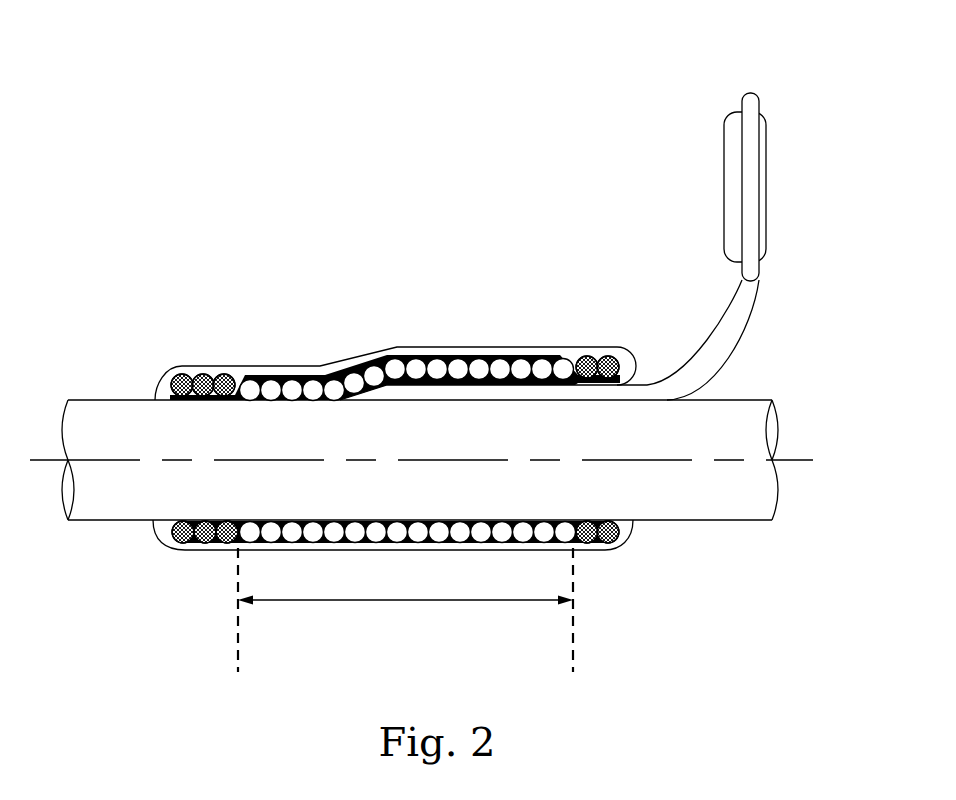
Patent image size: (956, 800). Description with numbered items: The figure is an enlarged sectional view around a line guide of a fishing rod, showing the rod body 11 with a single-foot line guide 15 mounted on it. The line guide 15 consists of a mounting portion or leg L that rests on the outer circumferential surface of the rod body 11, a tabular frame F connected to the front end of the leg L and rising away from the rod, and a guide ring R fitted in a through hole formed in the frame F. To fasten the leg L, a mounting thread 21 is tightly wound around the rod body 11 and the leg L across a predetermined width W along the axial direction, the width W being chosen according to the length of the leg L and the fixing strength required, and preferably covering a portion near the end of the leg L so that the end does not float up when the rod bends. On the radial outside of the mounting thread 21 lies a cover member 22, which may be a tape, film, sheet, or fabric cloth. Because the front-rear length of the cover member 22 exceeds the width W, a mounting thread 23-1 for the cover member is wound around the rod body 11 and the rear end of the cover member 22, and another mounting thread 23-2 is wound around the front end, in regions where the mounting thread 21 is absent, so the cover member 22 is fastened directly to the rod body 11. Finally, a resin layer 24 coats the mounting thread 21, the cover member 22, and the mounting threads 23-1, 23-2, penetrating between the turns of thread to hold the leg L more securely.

The rod body 11 is at (135, 418).
The line guide 15 is at (743, 105).
The mounting thread 21 is at (417, 378).
The cover member 22 is at (302, 379).
The mounting thread for the cover member 23-1 is at (203, 388).
The mounting thread for the cover member 23-2 is at (606, 362).
The resin layer 24 is at (493, 353).
The guide ring R is at (724, 235).
The frame F is at (748, 293).
The leg L is at (520, 393).
The width W is at (405, 610).